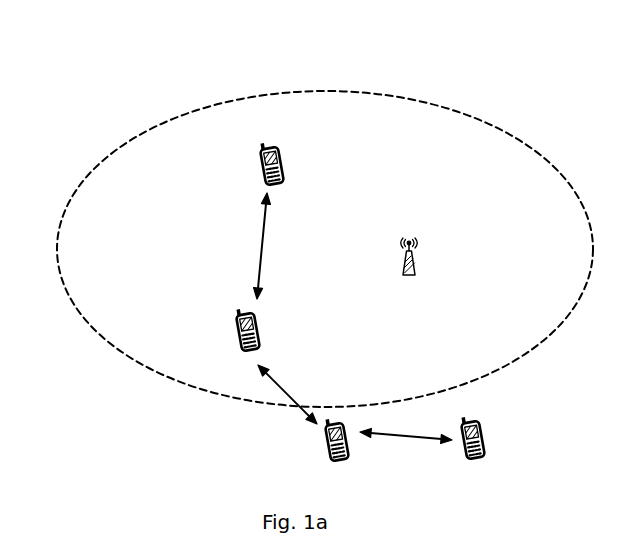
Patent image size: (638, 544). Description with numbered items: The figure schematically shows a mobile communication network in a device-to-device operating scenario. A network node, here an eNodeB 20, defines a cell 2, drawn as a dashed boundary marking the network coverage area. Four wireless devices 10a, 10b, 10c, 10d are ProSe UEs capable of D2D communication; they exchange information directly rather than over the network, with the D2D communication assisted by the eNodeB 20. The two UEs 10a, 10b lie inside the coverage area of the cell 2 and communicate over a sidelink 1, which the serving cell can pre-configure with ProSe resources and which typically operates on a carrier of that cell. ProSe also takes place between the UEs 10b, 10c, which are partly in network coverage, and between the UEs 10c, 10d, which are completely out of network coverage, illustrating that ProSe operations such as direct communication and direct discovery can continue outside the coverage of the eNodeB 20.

The sidelink 1 is at (258, 247).
The cell 2 is at (432, 100).
The wireless device 10a is at (263, 157).
The wireless device 10b is at (240, 331).
The wireless device 10c is at (328, 443).
The wireless device 10d is at (483, 441).
The eNodeB 20 is at (414, 262).